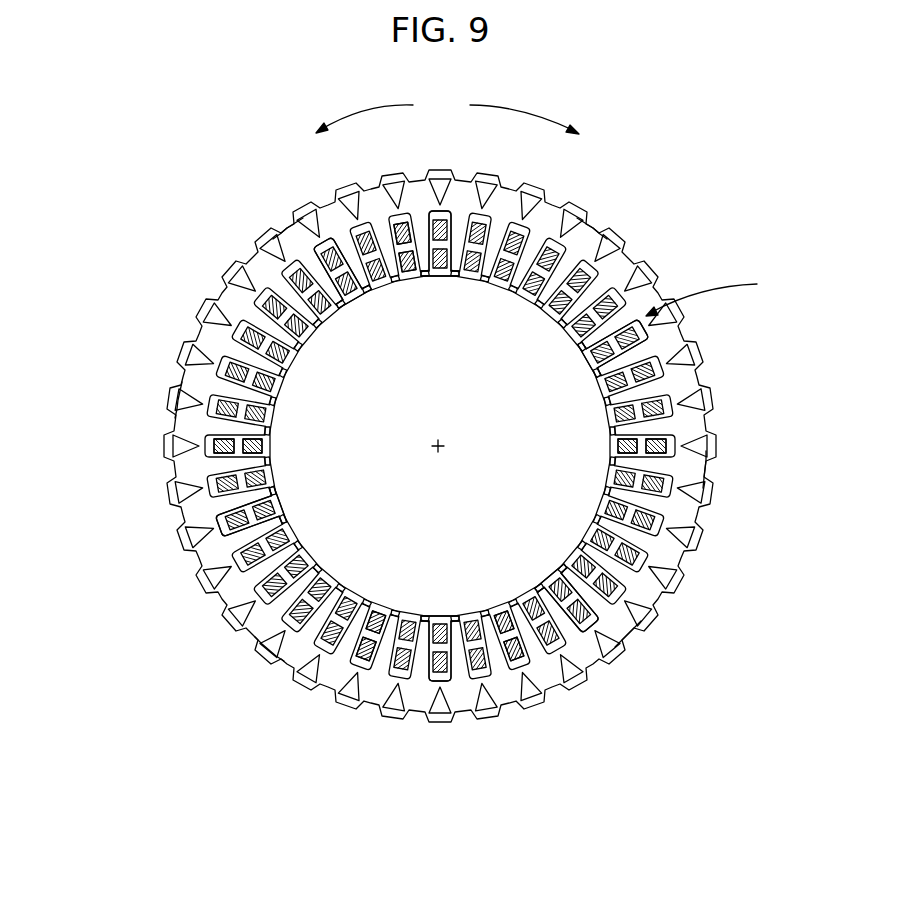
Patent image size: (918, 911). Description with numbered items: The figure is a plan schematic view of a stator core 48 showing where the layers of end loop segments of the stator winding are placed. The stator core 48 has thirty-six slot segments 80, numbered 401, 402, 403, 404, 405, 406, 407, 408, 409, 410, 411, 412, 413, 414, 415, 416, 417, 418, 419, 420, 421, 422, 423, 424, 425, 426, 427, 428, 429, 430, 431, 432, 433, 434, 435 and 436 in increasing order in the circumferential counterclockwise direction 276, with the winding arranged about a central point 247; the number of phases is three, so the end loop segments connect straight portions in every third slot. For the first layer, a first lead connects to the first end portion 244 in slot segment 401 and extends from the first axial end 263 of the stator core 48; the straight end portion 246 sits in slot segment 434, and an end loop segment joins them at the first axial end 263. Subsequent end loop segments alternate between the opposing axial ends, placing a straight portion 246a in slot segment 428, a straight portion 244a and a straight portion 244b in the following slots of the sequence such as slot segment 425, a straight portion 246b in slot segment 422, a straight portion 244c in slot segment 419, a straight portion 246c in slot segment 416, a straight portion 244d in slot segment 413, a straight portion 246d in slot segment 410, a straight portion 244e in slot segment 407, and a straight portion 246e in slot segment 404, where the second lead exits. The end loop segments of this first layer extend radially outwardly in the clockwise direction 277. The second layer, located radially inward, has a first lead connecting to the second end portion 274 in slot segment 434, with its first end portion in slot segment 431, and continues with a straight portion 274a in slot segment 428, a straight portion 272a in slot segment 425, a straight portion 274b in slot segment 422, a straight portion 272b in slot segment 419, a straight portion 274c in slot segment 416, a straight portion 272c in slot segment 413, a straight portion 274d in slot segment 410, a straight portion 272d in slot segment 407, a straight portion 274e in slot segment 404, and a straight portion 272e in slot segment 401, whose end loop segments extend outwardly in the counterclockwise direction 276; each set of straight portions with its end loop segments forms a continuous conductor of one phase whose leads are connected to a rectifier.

The stator core 48 is at (436, 470).
The slot segments 80 is at (714, 293).
The first end portion 244 is at (172, 470).
The straight portion 244a is at (290, 222).
The straight portion 244b is at (597, 223).
The straight portion 244c is at (708, 470).
The straight portion 244d is at (632, 638).
The straight portion 244e is at (268, 656).
The straight end portion 246 is at (206, 338).
The straight portion 246a is at (405, 188).
The straight portion 246b is at (670, 343).
The straight portion 246c is at (652, 592).
The straight portion 246d is at (450, 712).
The straight portion 246e is at (230, 593).
The central axis 247 is at (444, 442).
The first axial end 263 is at (185, 392).
The straight portion 272a is at (415, 285).
The straight portion 272b is at (607, 448).
The straight portion 272c is at (499, 602).
The straight portion 272d is at (386, 600).
The straight portion 272e is at (273, 447).
The second end portion 274 is at (358, 302).
The straight portion 274a is at (440, 279).
The straight portion 274b is at (590, 356).
The straight portion 274c is at (552, 572).
The straight portion 274d is at (438, 612).
The straight portion 274e is at (283, 504).
The counterclockwise direction 276 is at (367, 112).
The clockwise direction 277 is at (497, 110).
The slot segment 401 is at (202, 446).
The slot segment 402 is at (206, 487).
The slot segment 403 is at (216, 527).
The slot segment 404 is at (234, 565).
The slot segment 405 is at (258, 599).
The slot segment 406 is at (287, 628).
The slot segment 407 is at (321, 652).
The slot segment 408 is at (359, 670).
The slot segment 409 is at (399, 680).
The slot segment 410 is at (440, 684).
The slot segment 411 is at (481, 680).
The slot segment 412 is at (521, 670).
The slot segment 413 is at (559, 652).
The slot segment 414 is at (593, 628).
The slot segment 415 is at (622, 599).
The slot segment 416 is at (646, 565).
The slot segment 417 is at (664, 527).
The slot segment 418 is at (674, 487).
The slot segment 419 is at (678, 446).
The slot segment 420 is at (674, 405).
The slot segment 421 is at (664, 365).
The slot segment 422 is at (646, 327).
The slot segment 423 is at (622, 293).
The slot segment 424 is at (593, 264).
The slot segment 425 is at (559, 240).
The slot segment 426 is at (521, 222).
The slot segment 427 is at (481, 212).
The slot segment 428 is at (440, 208).
The slot segment 429 is at (399, 212).
The slot segment 430 is at (359, 222).
The slot segment 431 is at (321, 240).
The slot segment 432 is at (287, 264).
The slot segment 433 is at (258, 293).
The slot segment 434 is at (234, 327).
The slot segment 435 is at (216, 365).
The slot segment 436 is at (206, 405).